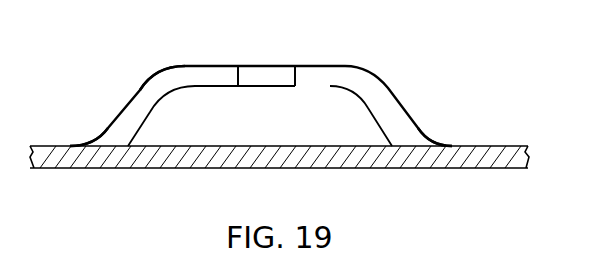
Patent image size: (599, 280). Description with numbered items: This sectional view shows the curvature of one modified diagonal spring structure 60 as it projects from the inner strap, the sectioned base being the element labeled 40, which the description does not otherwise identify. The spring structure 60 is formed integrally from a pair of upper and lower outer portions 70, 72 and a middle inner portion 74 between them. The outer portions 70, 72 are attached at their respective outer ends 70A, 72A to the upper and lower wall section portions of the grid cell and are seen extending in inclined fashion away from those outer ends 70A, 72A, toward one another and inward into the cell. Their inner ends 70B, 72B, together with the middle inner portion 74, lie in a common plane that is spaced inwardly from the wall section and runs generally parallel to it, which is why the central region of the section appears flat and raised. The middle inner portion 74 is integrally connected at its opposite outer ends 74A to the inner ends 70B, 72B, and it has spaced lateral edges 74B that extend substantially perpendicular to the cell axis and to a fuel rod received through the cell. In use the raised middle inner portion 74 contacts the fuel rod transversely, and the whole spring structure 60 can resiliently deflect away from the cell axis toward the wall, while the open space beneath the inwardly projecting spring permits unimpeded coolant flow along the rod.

The base plate 40 is at (492, 145).
The modified diagonal spring structure 60 is at (358, 43).
The upper outer portion 70 is at (407, 107).
The outer end of upper outer portion 70A is at (408, 150).
The inner end of upper outer portion 70B is at (330, 80).
The lower outer portion 72 is at (128, 115).
The outer end of lower outer portion 72A is at (117, 140).
The inner end of lower outer portion 72B is at (192, 65).
The middle inner portion 74 is at (267, 63).
The outer ends of middle inner portion 74A is at (247, 65).
The lateral edges of middle inner portion 74B is at (263, 80).